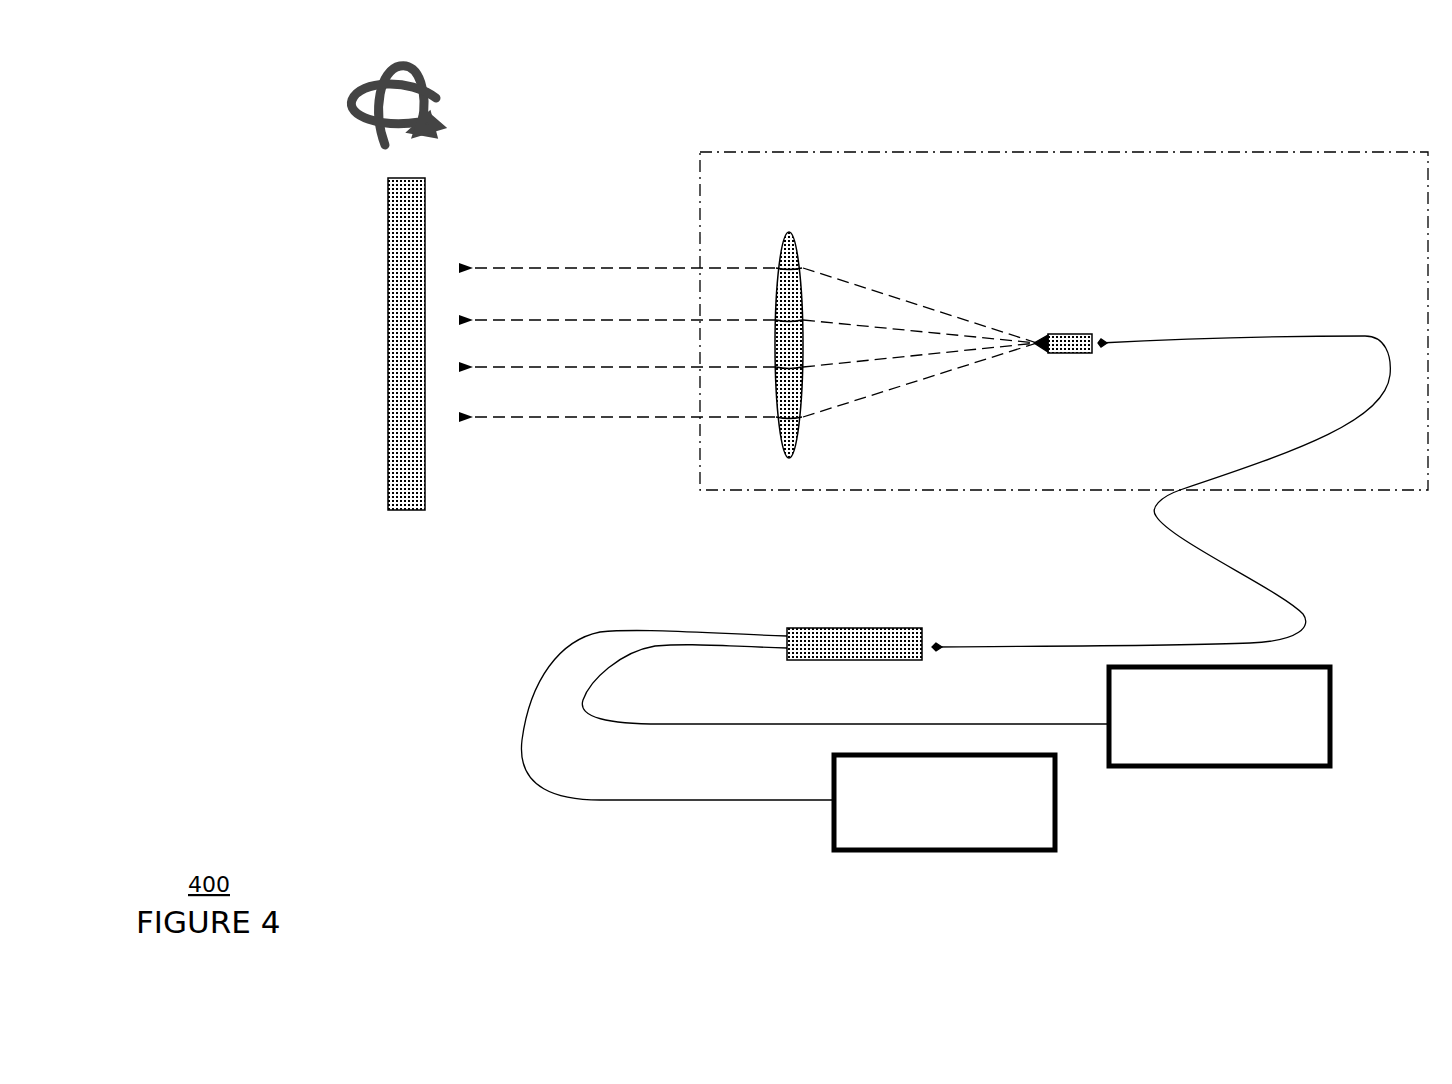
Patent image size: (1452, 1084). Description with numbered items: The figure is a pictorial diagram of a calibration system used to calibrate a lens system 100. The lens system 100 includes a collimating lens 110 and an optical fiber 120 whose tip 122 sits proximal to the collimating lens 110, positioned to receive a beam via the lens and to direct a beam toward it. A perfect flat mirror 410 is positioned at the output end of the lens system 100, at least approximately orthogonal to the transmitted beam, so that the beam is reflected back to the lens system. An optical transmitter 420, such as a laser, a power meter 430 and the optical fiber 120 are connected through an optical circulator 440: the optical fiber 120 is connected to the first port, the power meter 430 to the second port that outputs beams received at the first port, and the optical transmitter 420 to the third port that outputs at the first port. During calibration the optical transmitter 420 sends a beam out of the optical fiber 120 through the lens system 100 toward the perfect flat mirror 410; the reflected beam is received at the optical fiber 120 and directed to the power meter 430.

The lens system 100 is at (1064, 401).
The collimating lens 110 is at (779, 262).
The optical fiber 120 is at (1290, 334).
The tip 122 is at (1058, 333).
The perfect flat mirror 410 is at (425, 215).
The optical transmitter 420 is at (944, 802).
The power meter 430 is at (1219, 716).
The optical circulator 440 is at (906, 628).